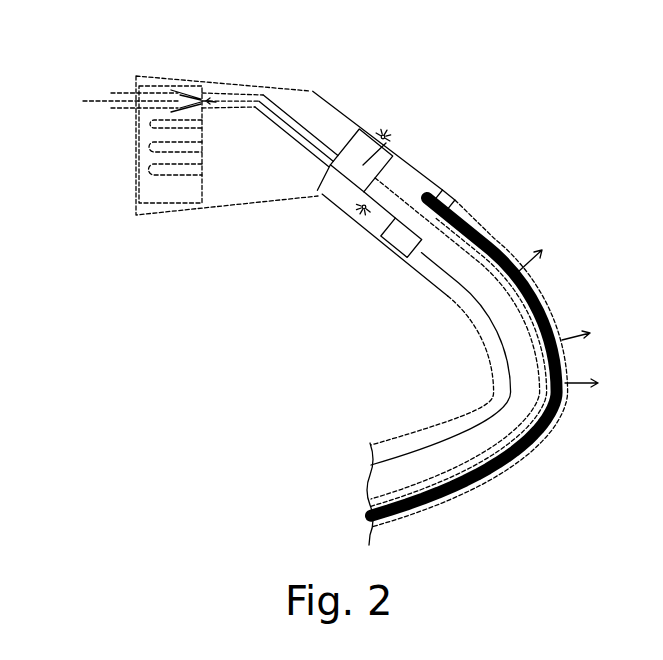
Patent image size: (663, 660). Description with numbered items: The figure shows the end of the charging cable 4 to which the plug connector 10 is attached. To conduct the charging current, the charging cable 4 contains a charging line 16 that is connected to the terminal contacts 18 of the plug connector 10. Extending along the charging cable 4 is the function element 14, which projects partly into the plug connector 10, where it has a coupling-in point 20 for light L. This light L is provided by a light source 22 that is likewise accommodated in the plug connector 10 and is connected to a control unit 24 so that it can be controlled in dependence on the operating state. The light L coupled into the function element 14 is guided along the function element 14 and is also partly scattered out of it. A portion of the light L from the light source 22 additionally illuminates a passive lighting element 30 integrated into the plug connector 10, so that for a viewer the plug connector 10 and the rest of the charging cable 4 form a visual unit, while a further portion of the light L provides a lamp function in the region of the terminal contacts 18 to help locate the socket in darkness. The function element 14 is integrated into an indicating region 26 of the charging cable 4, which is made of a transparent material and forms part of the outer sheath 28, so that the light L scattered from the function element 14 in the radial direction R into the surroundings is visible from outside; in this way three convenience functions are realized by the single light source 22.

The charging cable 4 is at (504, 132).
The plug connector 10 is at (253, 82).
The function element 14 is at (452, 196).
The charging line 16 is at (442, 262).
The terminal contacts 18 is at (187, 175).
The coupling-in point 20 is at (438, 190).
The light source 22 is at (364, 216).
The control unit 24 is at (410, 265).
The indicating region 26 is at (508, 252).
The outer sheath 28 is at (472, 410).
The passive lighting element 30 is at (382, 128).
The light L is at (290, 90).
The radial direction R is at (566, 300).